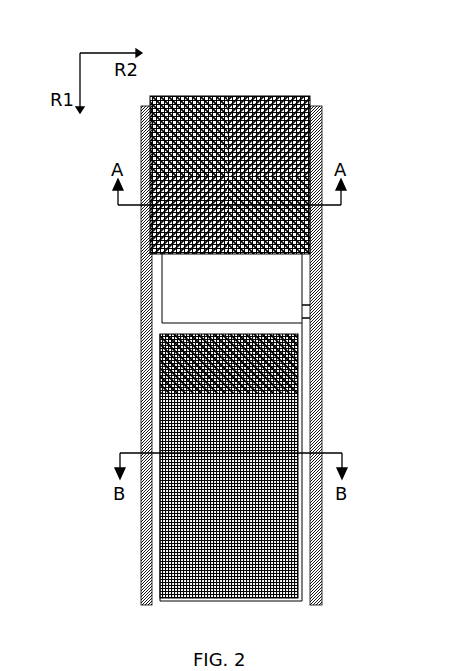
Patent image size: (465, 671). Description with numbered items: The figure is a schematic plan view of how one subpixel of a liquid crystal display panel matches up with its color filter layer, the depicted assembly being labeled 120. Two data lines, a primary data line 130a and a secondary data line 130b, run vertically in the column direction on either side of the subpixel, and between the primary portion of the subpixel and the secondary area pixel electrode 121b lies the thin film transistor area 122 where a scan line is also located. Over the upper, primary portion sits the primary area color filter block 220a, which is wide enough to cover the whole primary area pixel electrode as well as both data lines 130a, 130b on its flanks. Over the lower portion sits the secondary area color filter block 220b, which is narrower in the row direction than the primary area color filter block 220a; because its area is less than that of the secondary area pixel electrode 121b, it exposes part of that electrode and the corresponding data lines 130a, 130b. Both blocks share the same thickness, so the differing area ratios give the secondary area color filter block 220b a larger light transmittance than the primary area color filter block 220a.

The package structure 120 is at (219, 80).
The primary area color filter block 220a is at (310, 97).
The thin film transistor area 122 is at (163, 288).
The primary data line 130a is at (142, 300).
The secondary data line 130b is at (360, 278).
The secondary area color filter block 220b is at (300, 392).
The secondary area pixel electrode 121b is at (300, 437).